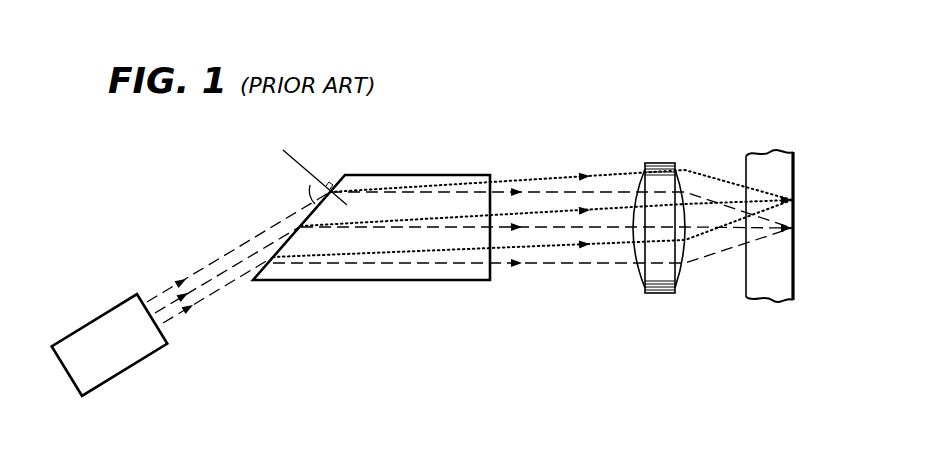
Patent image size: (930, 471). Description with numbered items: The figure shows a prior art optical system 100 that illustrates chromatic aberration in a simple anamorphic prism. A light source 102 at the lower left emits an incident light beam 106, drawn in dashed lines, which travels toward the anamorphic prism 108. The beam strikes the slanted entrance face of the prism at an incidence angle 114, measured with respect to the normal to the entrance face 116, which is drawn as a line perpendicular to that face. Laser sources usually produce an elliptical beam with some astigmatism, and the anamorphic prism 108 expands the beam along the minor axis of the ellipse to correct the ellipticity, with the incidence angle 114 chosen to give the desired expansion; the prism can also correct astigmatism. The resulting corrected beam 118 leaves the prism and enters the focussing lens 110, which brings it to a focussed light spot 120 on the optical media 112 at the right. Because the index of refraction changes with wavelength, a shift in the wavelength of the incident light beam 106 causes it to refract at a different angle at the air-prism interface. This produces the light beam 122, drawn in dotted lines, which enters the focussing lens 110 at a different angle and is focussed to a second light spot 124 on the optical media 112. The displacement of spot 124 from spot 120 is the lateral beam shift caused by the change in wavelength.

The optical system 100 is at (764, 52).
The light source 102 is at (70, 375).
The incident light beam 106 is at (222, 262).
The anamorphic prism 108 is at (421, 174).
The focussing lens 110 is at (663, 162).
The optical media 112 is at (768, 160).
The incidence angle 114 is at (310, 185).
The normal to the entrance face 116 is at (342, 173).
The corrected beam 118 is at (590, 265).
The focussed light spot 120 is at (795, 229).
The light beam 122 is at (617, 170).
The focussed light spot 124 is at (795, 200).